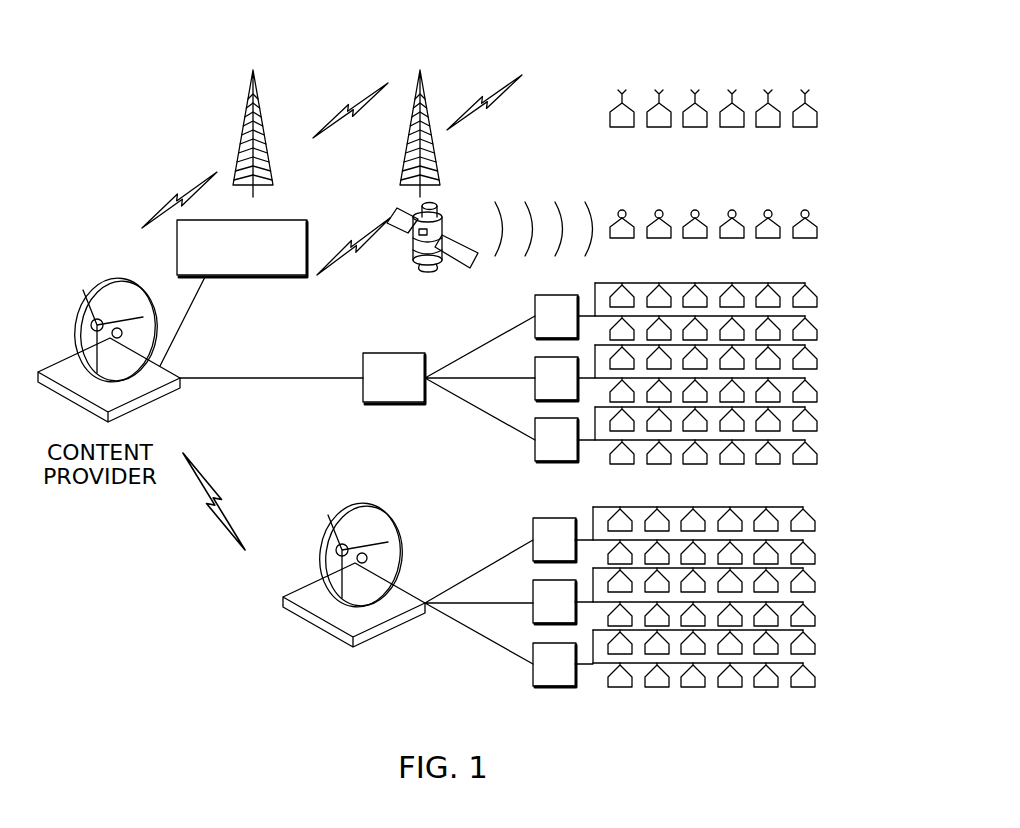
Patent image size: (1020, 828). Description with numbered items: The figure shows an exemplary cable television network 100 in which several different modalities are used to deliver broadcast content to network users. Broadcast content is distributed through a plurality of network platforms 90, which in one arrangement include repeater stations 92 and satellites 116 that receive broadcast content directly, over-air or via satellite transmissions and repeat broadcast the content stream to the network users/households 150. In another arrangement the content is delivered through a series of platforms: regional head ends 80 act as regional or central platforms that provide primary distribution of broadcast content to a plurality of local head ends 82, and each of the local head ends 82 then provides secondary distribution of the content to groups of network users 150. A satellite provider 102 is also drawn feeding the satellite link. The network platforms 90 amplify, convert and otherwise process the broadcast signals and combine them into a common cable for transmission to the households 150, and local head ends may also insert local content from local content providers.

The regional head end 80 is at (430, 667).
The local head end 82 is at (564, 485).
The network platforms 90 is at (240, 76).
The repeater station 92 is at (268, 178).
The cable television network 100 is at (152, 580).
The satellite provider 102 is at (258, 277).
The satellite 116 is at (429, 272).
The network users/households 150 is at (828, 110).